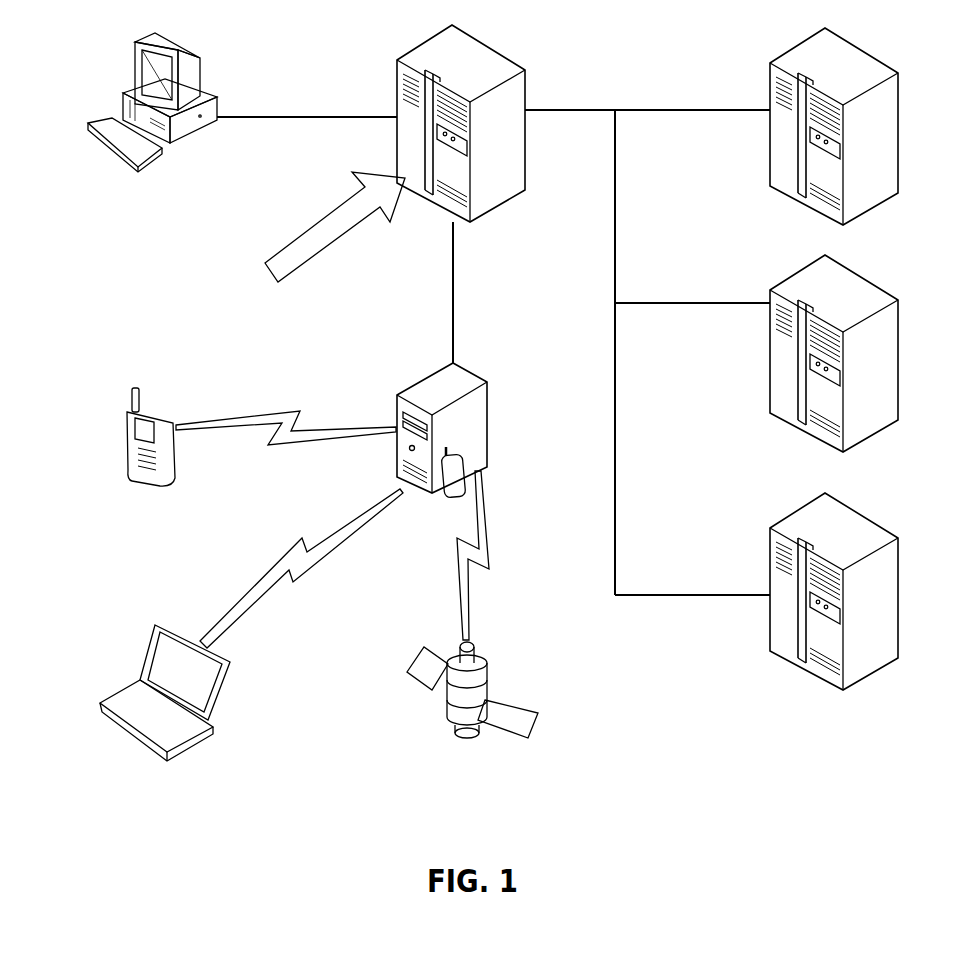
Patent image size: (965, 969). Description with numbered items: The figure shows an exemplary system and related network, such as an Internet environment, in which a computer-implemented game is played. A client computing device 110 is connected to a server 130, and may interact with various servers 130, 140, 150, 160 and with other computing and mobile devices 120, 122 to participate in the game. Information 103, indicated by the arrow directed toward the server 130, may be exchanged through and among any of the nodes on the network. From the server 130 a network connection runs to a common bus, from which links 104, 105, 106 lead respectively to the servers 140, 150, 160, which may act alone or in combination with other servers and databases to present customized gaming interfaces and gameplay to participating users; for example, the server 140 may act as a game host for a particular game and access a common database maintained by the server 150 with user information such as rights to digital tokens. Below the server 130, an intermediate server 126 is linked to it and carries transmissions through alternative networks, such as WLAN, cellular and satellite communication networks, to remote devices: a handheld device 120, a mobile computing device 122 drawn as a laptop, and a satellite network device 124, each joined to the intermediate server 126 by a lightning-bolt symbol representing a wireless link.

The information 103 is at (313, 236).
The network connection to server 140 104 is at (692, 92).
The network connection to server 150 105 is at (692, 287).
The network connection to server 160 106 is at (692, 573).
The client computing device 110 is at (119, 102).
The handheld device 120 is at (226, 437).
The mobile computing device 122 is at (240, 625).
The satellite network device 124 is at (449, 604).
The intermediate server 126 is at (424, 420).
The server 130 is at (473, 123).
The server 140 is at (860, 126).
The server 150 is at (860, 353).
The server 160 is at (856, 591).